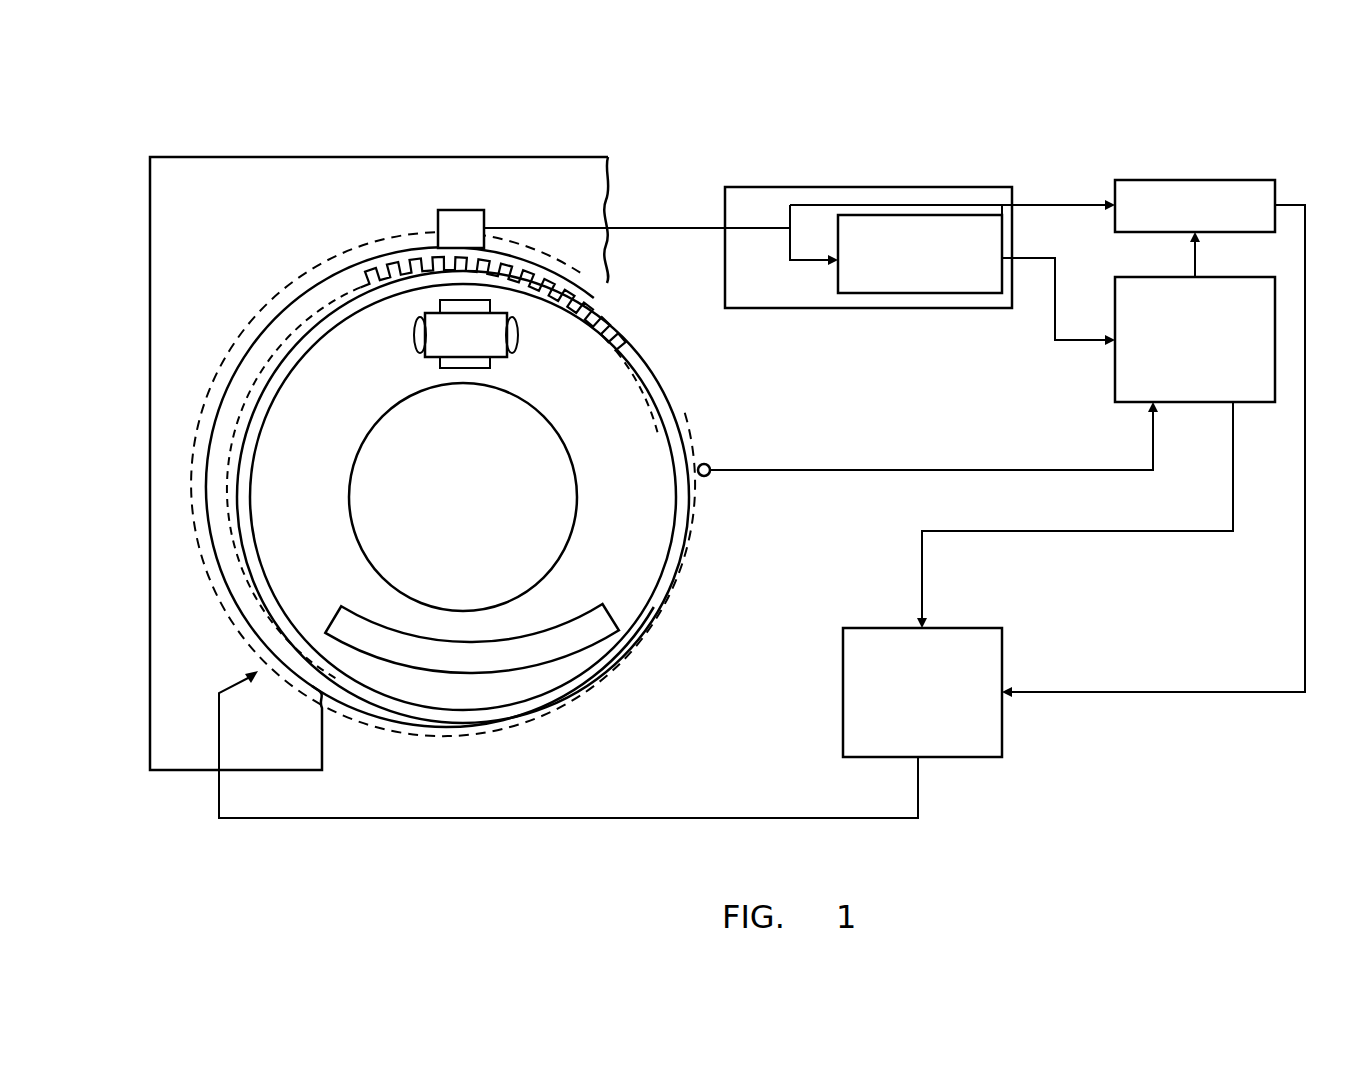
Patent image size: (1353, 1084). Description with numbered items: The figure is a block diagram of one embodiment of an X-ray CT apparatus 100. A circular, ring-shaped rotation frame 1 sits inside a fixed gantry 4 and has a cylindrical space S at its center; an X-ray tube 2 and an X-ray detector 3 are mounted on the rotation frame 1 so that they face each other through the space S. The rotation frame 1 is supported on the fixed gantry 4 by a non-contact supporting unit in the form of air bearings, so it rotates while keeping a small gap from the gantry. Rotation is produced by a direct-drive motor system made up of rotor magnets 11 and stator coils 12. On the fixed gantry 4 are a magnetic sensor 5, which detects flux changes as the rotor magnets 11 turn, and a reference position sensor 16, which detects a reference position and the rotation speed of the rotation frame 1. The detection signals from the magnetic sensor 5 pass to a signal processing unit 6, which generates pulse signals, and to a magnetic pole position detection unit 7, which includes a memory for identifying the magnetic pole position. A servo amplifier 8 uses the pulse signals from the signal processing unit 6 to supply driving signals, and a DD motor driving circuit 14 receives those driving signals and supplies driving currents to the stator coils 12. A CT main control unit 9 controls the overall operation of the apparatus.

The rotation frame 1 is at (663, 521).
The X-ray tube 2 is at (512, 345).
The X-ray detector 3 is at (604, 606).
The fixed gantry 4 is at (150, 258).
The magnetic sensor 5 is at (463, 210).
The signal processing unit 6 is at (968, 187).
The magnetic pole position detection unit 7 is at (968, 293).
The servo amplifier 8 is at (1262, 180).
The CT main control unit 9 is at (1256, 402).
The rotor magnets 11 is at (640, 326).
The stator coils 12 is at (308, 272).
The DD motor driving circuit 14 is at (982, 628).
The reference position sensor 16 is at (707, 462).
The X-ray CT apparatus 100 is at (742, 140).
The cylindrical space S is at (547, 502).